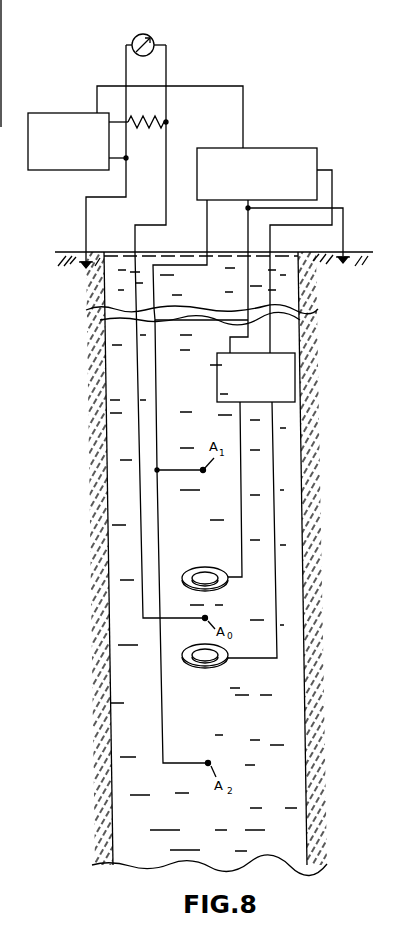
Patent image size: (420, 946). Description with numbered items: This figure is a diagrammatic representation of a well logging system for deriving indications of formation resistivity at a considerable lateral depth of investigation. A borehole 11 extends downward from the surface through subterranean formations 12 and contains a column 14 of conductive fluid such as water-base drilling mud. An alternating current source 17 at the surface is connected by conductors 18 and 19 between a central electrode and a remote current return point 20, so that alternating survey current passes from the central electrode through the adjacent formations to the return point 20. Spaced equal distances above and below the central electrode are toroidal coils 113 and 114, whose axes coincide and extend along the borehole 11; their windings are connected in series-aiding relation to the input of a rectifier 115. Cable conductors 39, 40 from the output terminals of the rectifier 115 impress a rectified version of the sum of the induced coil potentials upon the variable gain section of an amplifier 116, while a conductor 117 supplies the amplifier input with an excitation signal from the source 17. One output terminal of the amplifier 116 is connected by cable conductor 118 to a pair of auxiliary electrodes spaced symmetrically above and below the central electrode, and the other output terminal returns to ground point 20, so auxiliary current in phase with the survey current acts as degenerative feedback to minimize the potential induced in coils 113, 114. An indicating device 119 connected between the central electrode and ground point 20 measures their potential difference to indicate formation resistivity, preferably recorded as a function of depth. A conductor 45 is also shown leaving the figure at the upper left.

The conductor 45 is at (0, 78).
The indicating device 119 is at (152, 38).
The conductor 117 is at (190, 86).
The amplifier 116 is at (275, 148).
The alternating current source 17 is at (85, 113).
The conductor 18 is at (166, 205).
The conductor 19 is at (86, 227).
The remote current return point 20 is at (80, 268).
The cable conductor 118 is at (155, 300).
The cable conductor 39 is at (248, 322).
The cable conductor 40 is at (271, 348).
The rectifier 115 is at (217, 386).
The toroidal coil 113 is at (205, 567).
The toroidal coil 114 is at (207, 667).
The column of conductive fluid 14 is at (257, 732).
The borehole 11 is at (307, 745).
The subterranean formations 12 is at (342, 794).